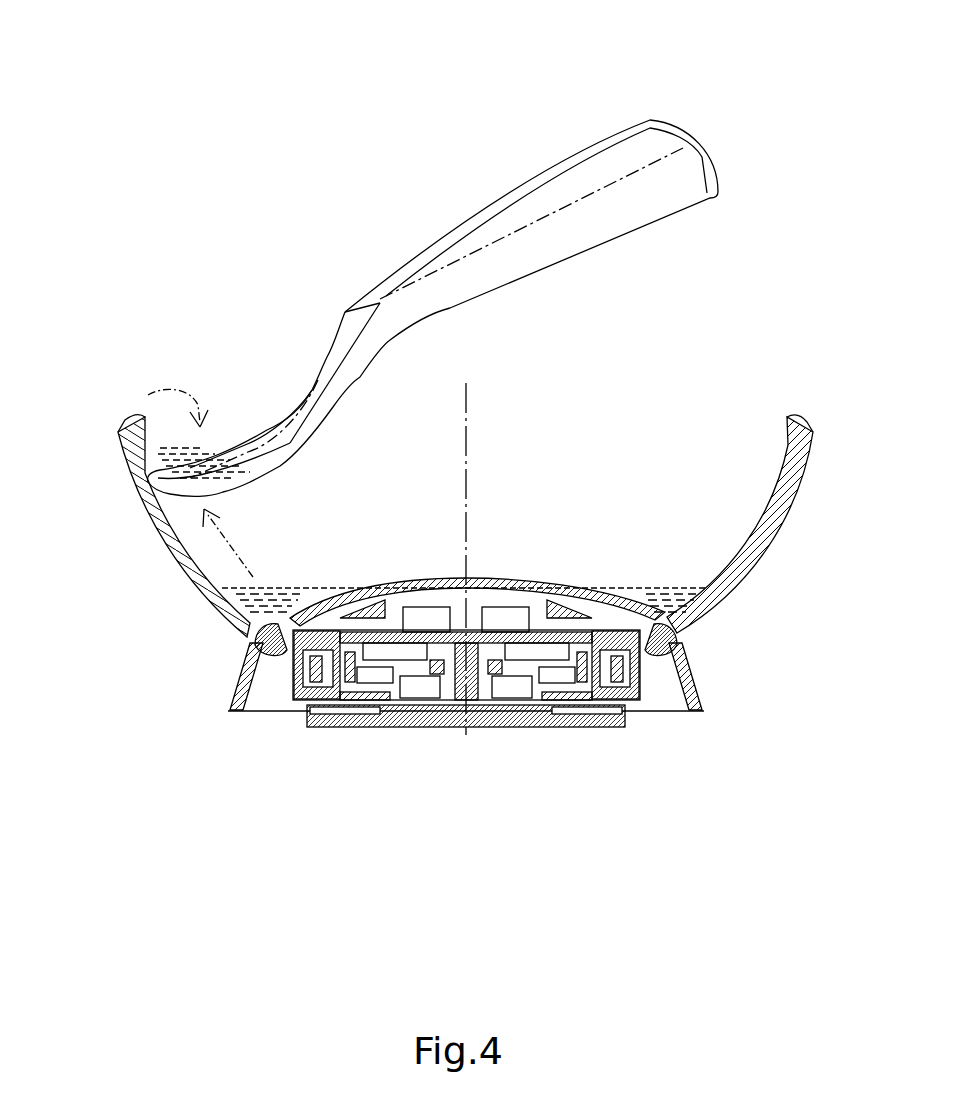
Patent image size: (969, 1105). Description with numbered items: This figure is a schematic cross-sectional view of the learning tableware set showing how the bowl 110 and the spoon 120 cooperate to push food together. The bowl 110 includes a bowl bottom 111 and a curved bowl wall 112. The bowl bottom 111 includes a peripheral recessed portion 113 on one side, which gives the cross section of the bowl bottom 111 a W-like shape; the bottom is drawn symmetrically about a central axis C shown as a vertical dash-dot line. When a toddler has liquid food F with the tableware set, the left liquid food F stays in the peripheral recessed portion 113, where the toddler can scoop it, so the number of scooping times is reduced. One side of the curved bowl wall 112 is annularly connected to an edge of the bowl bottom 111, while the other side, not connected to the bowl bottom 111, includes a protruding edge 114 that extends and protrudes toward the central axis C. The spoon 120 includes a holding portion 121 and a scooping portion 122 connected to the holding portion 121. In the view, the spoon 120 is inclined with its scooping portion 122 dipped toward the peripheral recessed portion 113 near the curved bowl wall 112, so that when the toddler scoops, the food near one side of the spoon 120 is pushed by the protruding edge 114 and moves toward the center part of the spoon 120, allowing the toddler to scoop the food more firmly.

The bowl 110 is at (828, 350).
The bowl bottom 111 is at (446, 581).
The curved bowl wall 112 is at (152, 522).
The peripheral recessed portion 113 is at (666, 598).
The protruding edge 114 is at (794, 414).
The spoon 120 is at (500, 140).
The holding portion 121 is at (556, 243).
The scooping portion 122 is at (270, 461).
The liquid food F is at (120, 440).
The central axis C is at (464, 581).